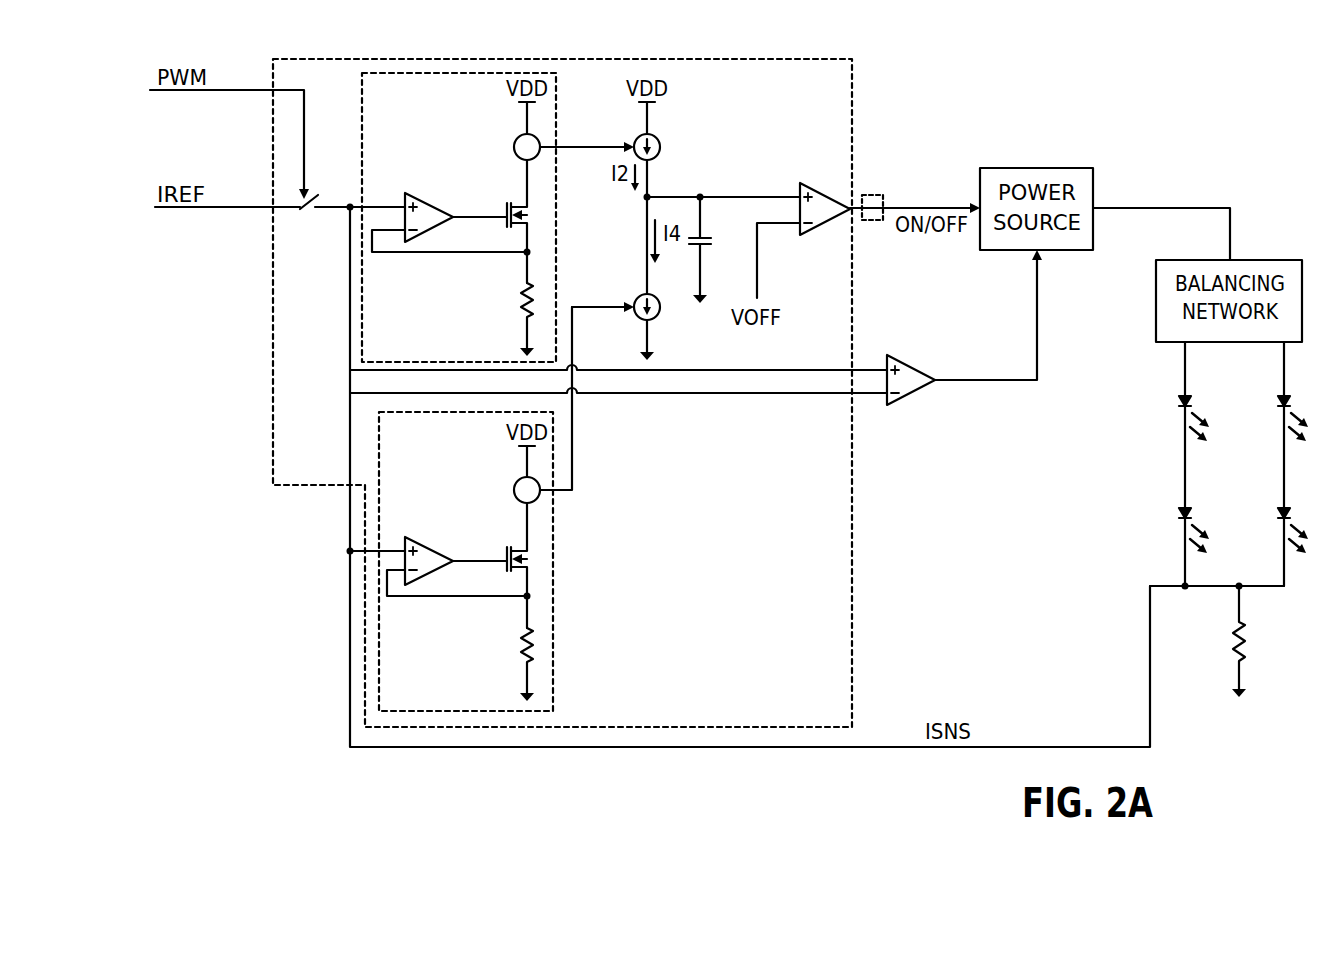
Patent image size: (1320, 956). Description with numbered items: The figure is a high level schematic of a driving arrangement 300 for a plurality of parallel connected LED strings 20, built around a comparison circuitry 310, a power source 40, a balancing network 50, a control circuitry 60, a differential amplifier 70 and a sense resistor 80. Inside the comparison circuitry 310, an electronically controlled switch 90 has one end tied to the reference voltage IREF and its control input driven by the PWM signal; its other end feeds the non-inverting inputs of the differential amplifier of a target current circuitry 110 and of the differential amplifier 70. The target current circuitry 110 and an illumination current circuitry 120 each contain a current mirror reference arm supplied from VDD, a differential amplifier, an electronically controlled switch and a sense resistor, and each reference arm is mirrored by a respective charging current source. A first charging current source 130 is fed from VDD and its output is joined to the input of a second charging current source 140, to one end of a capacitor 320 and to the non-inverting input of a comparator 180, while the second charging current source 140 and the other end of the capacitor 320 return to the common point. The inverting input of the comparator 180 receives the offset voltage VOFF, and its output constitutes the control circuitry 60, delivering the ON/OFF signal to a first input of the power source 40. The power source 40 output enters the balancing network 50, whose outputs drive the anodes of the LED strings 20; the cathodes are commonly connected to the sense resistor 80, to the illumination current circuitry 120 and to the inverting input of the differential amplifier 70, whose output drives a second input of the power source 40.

The driving arrangement 300 is at (1280, 117).
The comparison circuitry 310 is at (854, 80).
The target current circuitry 110 is at (557, 236).
The illumination current circuitry 120 is at (554, 590).
The electronically controlled switch 90 is at (302, 212).
The first charging current source 130 is at (661, 150).
The second charging current source 140 is at (660, 312).
The capacitor 320 is at (712, 241).
The comparator 180 is at (822, 183).
The control circuitry 60 is at (878, 195).
The power source 40 is at (1036, 168).
The differential amplifier 70 is at (915, 357).
The balancing network 50 is at (1156, 306).
The LED strings 20 is at (1284, 384).
The sense resistor 80 is at (1251, 648).